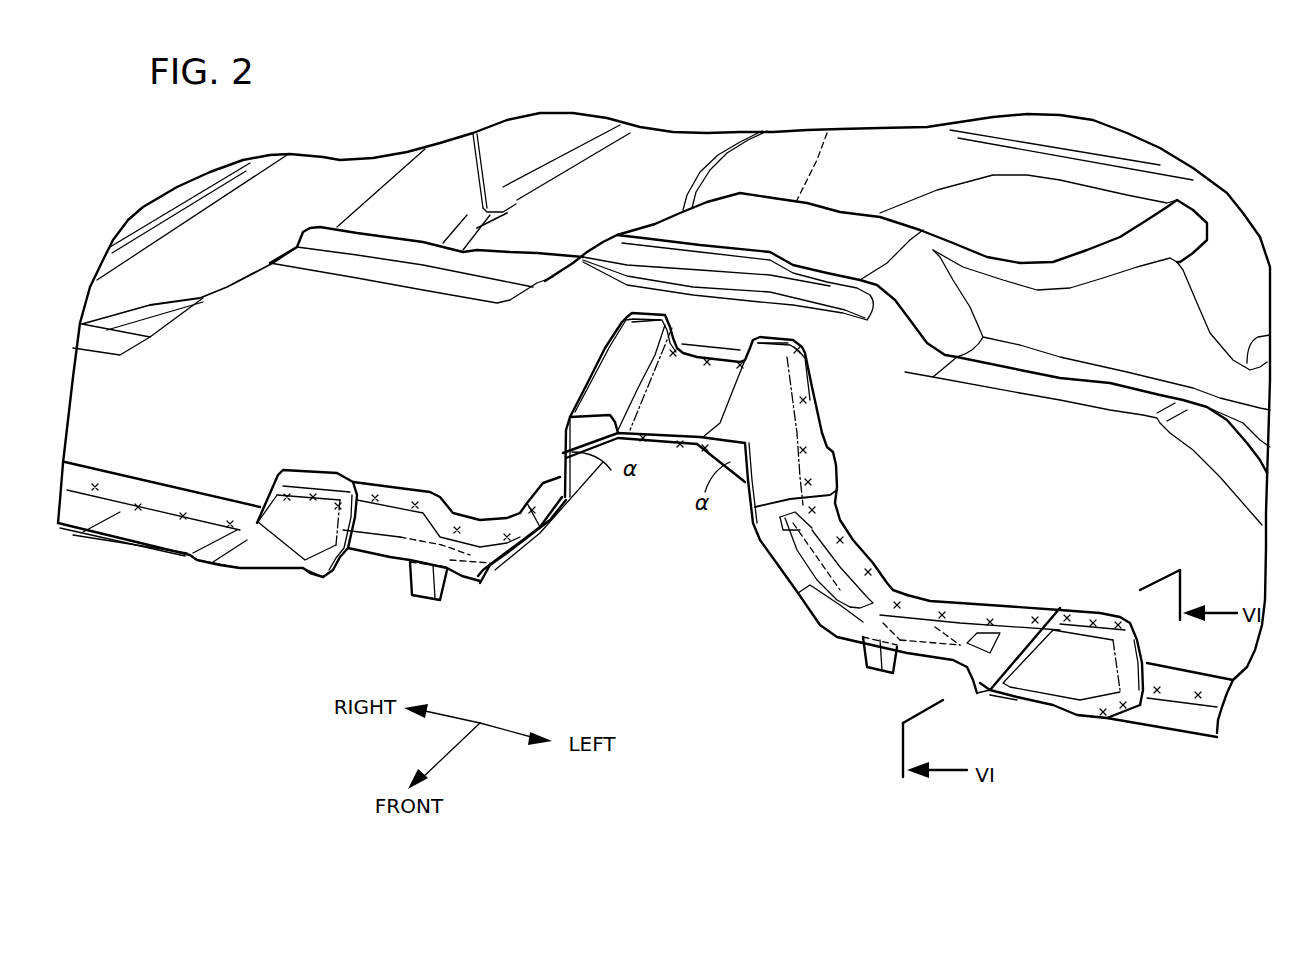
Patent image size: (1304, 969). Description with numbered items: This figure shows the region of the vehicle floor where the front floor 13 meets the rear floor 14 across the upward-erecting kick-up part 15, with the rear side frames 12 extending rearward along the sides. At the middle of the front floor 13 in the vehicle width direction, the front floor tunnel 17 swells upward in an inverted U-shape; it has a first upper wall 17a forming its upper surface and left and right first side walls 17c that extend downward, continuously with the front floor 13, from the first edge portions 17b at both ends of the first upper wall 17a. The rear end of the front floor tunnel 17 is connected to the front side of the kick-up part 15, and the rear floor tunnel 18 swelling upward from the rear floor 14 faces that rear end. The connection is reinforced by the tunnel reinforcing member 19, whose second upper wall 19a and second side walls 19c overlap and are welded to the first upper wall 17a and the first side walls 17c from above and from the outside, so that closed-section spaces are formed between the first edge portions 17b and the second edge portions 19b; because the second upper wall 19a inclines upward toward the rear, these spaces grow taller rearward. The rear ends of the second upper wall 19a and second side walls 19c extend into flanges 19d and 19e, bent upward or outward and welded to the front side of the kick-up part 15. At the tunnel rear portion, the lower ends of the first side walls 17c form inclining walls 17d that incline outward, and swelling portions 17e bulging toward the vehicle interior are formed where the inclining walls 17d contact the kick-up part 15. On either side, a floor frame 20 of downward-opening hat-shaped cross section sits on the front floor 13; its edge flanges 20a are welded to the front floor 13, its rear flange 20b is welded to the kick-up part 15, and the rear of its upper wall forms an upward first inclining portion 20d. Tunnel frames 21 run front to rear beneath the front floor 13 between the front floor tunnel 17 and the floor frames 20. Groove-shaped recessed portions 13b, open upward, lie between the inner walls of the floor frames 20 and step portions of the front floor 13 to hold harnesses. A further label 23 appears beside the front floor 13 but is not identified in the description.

The rear side frame 12 is at (340, 180).
The front floor 13 is at (150, 533).
The recessed portion 13b is at (325, 578).
The rear floor 14 is at (604, 199).
The kick-up part 15 is at (379, 375).
The front floor tunnel 17 is at (697, 468).
The first upper wall 17a is at (667, 457).
The first edge portion 17b is at (583, 490).
The first side wall 17c is at (587, 513).
The inclining wall 17d is at (547, 538).
The swelling portion 17e is at (833, 567).
The rear floor tunnel 18 is at (832, 218).
The tunnel reinforcing member 19 is at (592, 365).
The second upper wall 19a is at (703, 380).
The second edge portion 19b is at (572, 408).
The second side wall 19c is at (560, 438).
The flange 19d is at (728, 360).
The flange 19e is at (620, 328).
The floor frame 20 is at (249, 522).
The flange 20a is at (215, 564).
The flange 20b is at (298, 468).
The first inclining portion 20d is at (320, 507).
The tunnel frame 21 is at (420, 590).
The rear end member 23 is at (122, 566).